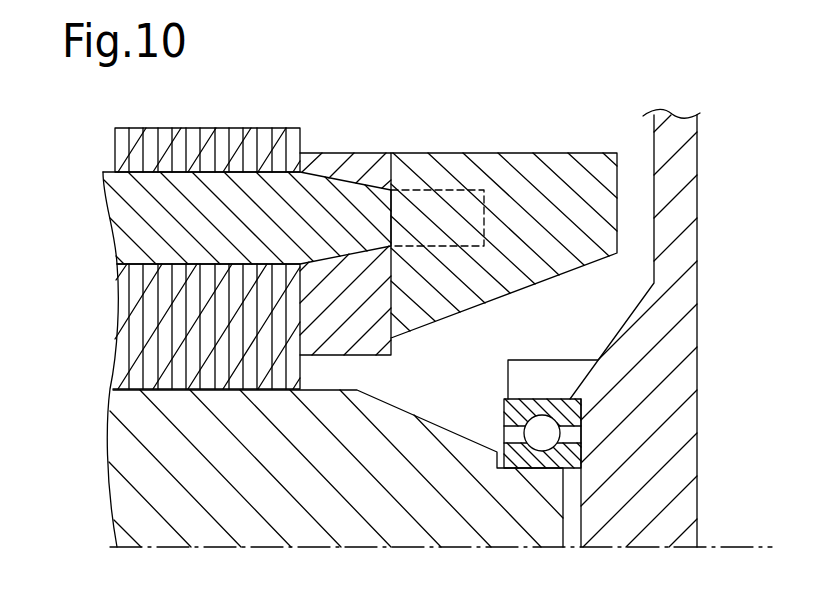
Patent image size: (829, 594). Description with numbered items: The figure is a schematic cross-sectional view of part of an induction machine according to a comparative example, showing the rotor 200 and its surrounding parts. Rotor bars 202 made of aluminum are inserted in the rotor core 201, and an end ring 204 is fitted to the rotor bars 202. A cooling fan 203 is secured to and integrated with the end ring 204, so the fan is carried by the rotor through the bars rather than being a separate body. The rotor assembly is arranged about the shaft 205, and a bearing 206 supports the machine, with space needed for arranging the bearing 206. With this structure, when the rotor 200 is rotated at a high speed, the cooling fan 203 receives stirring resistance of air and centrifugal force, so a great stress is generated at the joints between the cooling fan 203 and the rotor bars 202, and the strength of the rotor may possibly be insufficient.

The rotor 200 is at (336, 84).
The rotor core 201 is at (108, 372).
The rotor bars 202 is at (109, 230).
The cooling fan 203 is at (522, 153).
The end ring 204 is at (363, 153).
The shaft 205 is at (397, 406).
The bearing 206 is at (547, 400).